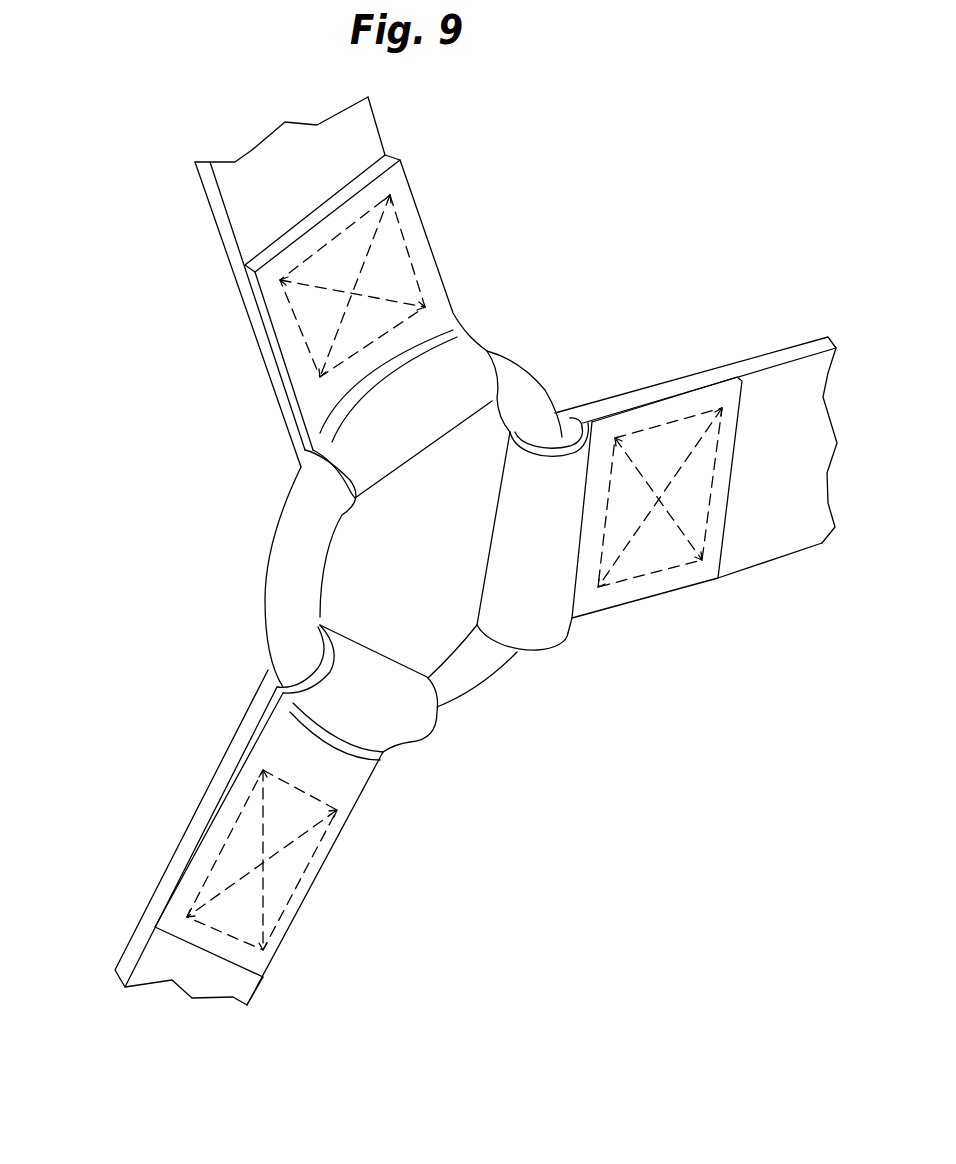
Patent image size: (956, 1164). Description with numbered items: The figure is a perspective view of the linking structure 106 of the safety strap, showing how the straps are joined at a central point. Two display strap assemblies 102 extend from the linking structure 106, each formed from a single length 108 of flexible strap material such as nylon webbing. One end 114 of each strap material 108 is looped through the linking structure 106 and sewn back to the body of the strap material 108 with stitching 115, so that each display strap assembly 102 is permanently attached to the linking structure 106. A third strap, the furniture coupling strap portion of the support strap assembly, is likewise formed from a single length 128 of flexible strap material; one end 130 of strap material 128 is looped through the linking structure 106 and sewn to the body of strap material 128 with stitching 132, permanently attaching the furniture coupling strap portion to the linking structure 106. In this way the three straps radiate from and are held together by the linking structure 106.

The display strap assembly 102 is at (232, 222).
The linking structure 106 is at (523, 363).
The length of flexible strap material 108 is at (377, 133).
The one end of strap material 114 is at (422, 240).
The stitching 115 is at (297, 328).
The length of flexible strap material 128 is at (132, 953).
The one end of strap material 130 is at (285, 938).
The stitching 132 is at (322, 843).